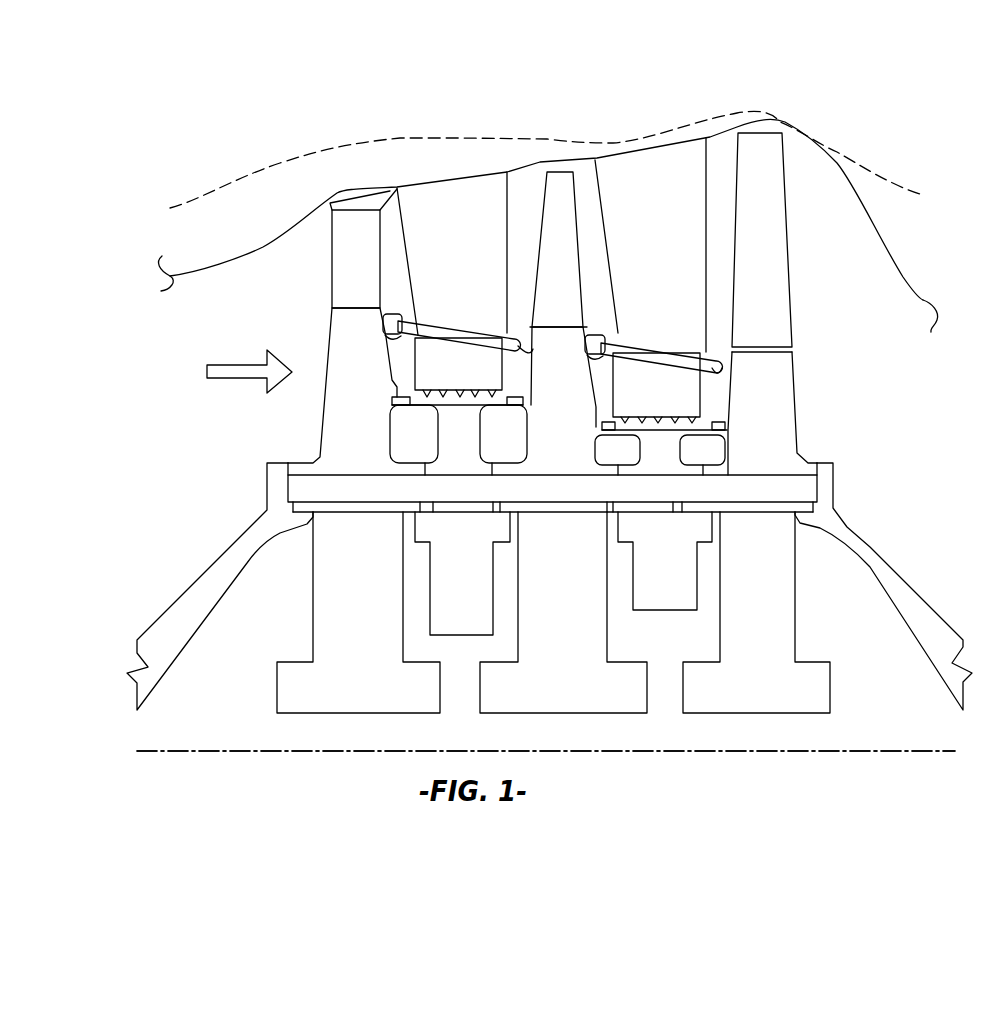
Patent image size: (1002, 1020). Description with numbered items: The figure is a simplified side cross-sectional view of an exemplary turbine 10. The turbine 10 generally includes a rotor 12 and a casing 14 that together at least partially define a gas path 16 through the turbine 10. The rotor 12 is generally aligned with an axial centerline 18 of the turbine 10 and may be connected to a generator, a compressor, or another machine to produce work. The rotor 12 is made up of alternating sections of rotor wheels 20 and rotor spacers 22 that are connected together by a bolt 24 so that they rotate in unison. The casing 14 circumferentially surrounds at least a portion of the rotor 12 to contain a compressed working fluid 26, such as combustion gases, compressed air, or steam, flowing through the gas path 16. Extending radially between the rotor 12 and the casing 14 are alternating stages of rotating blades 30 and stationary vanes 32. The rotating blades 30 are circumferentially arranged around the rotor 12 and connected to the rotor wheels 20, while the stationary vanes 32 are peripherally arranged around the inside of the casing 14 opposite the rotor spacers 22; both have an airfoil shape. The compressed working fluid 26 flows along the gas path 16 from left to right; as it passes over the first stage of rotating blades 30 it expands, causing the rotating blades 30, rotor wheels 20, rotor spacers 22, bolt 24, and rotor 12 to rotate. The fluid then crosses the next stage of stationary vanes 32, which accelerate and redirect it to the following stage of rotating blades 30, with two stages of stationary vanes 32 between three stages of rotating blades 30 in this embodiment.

The turbine 10 is at (278, 165).
The rotor 12 is at (719, 765).
The casing 14 is at (840, 174).
The gas path 16 is at (284, 330).
The axial centerline 18 is at (938, 753).
The rotor wheels 20 is at (347, 432).
The rotor spacers 22 is at (446, 447).
The bolt 24 is at (769, 475).
The compressed working fluid 26 is at (237, 371).
The rotating blades 30 is at (345, 245).
The stationary vanes 32 is at (452, 233).